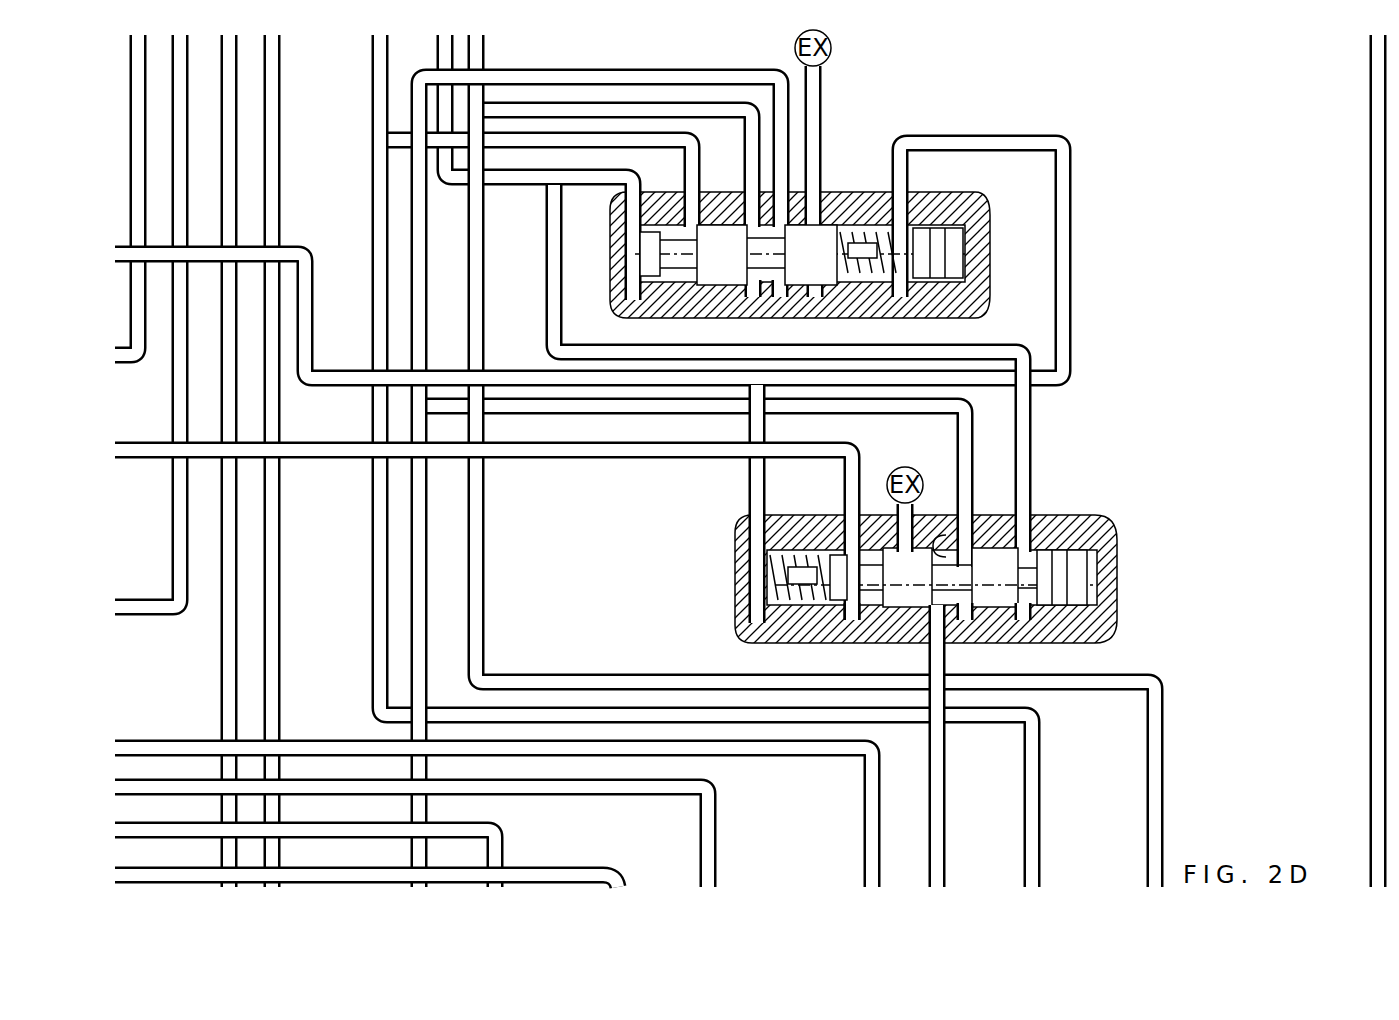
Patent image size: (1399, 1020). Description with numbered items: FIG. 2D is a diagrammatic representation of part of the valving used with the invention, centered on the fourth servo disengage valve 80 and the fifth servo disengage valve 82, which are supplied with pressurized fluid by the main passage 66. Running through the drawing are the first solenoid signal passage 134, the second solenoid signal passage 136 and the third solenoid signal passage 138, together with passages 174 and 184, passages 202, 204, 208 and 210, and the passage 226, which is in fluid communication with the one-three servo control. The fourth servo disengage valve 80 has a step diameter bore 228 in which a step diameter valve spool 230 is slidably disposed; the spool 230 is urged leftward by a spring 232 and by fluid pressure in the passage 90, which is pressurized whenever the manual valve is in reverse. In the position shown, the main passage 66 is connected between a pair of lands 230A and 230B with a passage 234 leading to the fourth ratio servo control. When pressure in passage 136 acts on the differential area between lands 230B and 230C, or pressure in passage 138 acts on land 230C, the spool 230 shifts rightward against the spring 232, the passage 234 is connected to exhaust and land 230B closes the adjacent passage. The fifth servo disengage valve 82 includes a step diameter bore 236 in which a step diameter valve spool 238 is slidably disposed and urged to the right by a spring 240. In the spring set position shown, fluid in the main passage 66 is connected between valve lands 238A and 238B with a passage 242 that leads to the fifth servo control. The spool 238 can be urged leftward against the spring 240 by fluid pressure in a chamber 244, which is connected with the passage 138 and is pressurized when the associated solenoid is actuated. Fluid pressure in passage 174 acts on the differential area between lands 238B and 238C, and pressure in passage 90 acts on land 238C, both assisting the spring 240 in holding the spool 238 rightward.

The main passage 66 is at (482, 52).
The fourth servo disengage valve 80 is at (1005, 269).
The fifth servo disengage valve 82 is at (1128, 568).
The passage 90 is at (1065, 325).
The first solenoid signal passage 134 is at (166, 745).
The second solenoid signal passage 136 is at (378, 165).
The third solenoid signal passage 138 is at (442, 50).
The passage 174 is at (645, 455).
The passage 184 is at (148, 785).
The passage 202 is at (192, 830).
The passage 204 is at (275, 100).
The passage 208 is at (228, 122).
The passage 210 is at (598, 870).
The passage 226 is at (1372, 460).
The step diameter bore 228 is at (857, 225).
The step diameter valve spool 230 is at (796, 233).
The valve land 230A is at (827, 290).
The valve land 230B is at (720, 292).
The valve land 230C is at (651, 240).
The spring 232 is at (920, 240).
The passage 234 is at (632, 75).
The step diameter bore 236 is at (946, 550).
The step diameter valve spool 238 is at (993, 545).
The valve land 238A is at (1000, 597).
The valve land 238B is at (912, 597).
The valve land 238C is at (835, 560).
The spring 240 is at (760, 592).
The passage 242 is at (940, 795).
The chamber 244 is at (1085, 625).